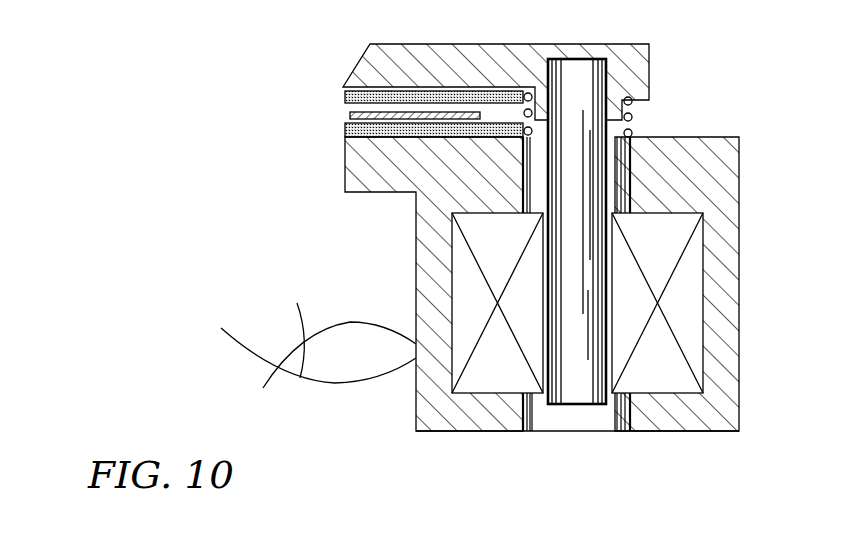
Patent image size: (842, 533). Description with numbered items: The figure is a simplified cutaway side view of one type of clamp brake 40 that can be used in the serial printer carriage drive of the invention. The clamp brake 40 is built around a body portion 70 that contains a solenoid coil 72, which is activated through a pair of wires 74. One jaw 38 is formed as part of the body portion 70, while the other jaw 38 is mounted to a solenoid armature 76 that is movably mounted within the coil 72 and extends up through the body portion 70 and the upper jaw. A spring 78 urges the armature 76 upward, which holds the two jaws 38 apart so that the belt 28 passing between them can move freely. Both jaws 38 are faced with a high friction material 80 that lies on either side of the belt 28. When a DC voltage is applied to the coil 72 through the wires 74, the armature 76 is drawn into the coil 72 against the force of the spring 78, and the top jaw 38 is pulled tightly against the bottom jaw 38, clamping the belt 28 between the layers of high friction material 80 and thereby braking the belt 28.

The jaw 38 is at (370, 62).
The belt 28 is at (443, 112).
The high friction material 80 is at (345, 97).
The clamp brake 40 is at (264, 166).
The solenoid armature 76 is at (588, 83).
The spring 78 is at (634, 117).
The body portion 70 is at (417, 292).
The solenoid coil 72 is at (697, 288).
The wires 74 is at (313, 332).